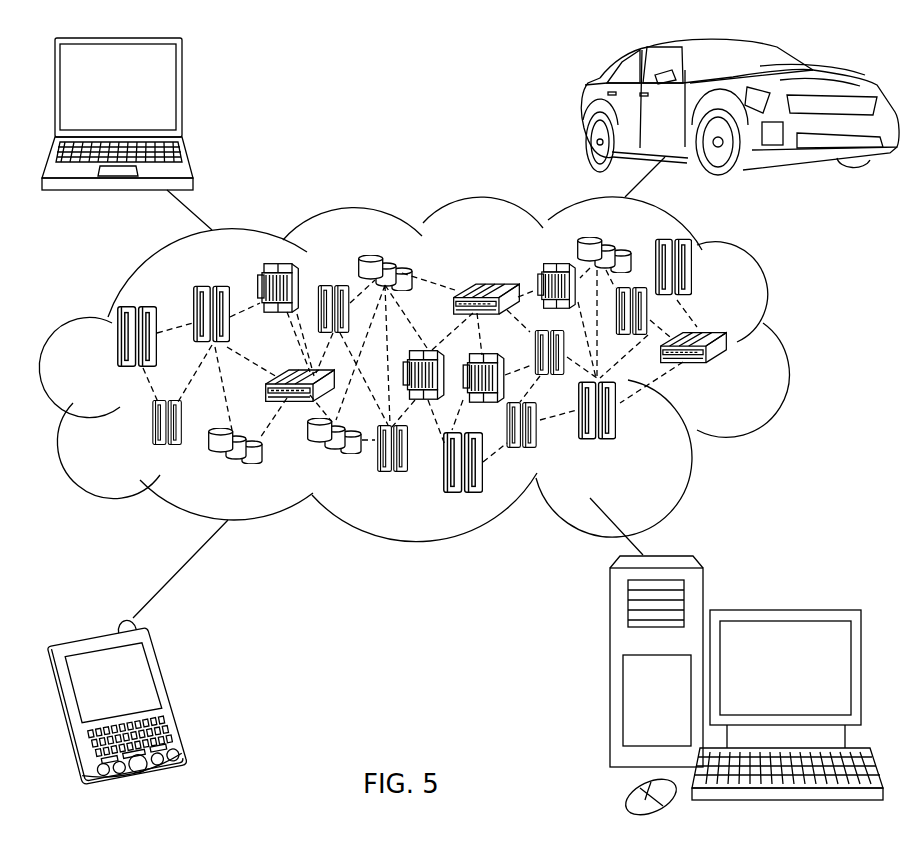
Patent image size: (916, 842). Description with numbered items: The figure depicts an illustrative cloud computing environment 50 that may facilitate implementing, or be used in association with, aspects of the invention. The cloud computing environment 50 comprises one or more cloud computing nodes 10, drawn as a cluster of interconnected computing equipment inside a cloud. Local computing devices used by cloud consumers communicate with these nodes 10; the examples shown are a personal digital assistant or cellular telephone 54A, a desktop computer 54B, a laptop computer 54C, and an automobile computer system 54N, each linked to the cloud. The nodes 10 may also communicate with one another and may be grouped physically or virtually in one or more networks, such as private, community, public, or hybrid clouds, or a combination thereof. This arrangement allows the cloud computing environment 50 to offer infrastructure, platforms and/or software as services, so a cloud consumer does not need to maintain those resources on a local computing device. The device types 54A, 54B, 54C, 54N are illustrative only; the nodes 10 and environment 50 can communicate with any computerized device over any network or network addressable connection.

The cloud computing environment 50 is at (787, 343).
The cloud computing nodes 10 is at (728, 375).
The personal digital assistant (PDA) or cellular telephone 54A is at (173, 694).
The desktop computer 54B is at (784, 610).
The laptop computer 54C is at (182, 93).
The automobile computer system 54N is at (583, 108).